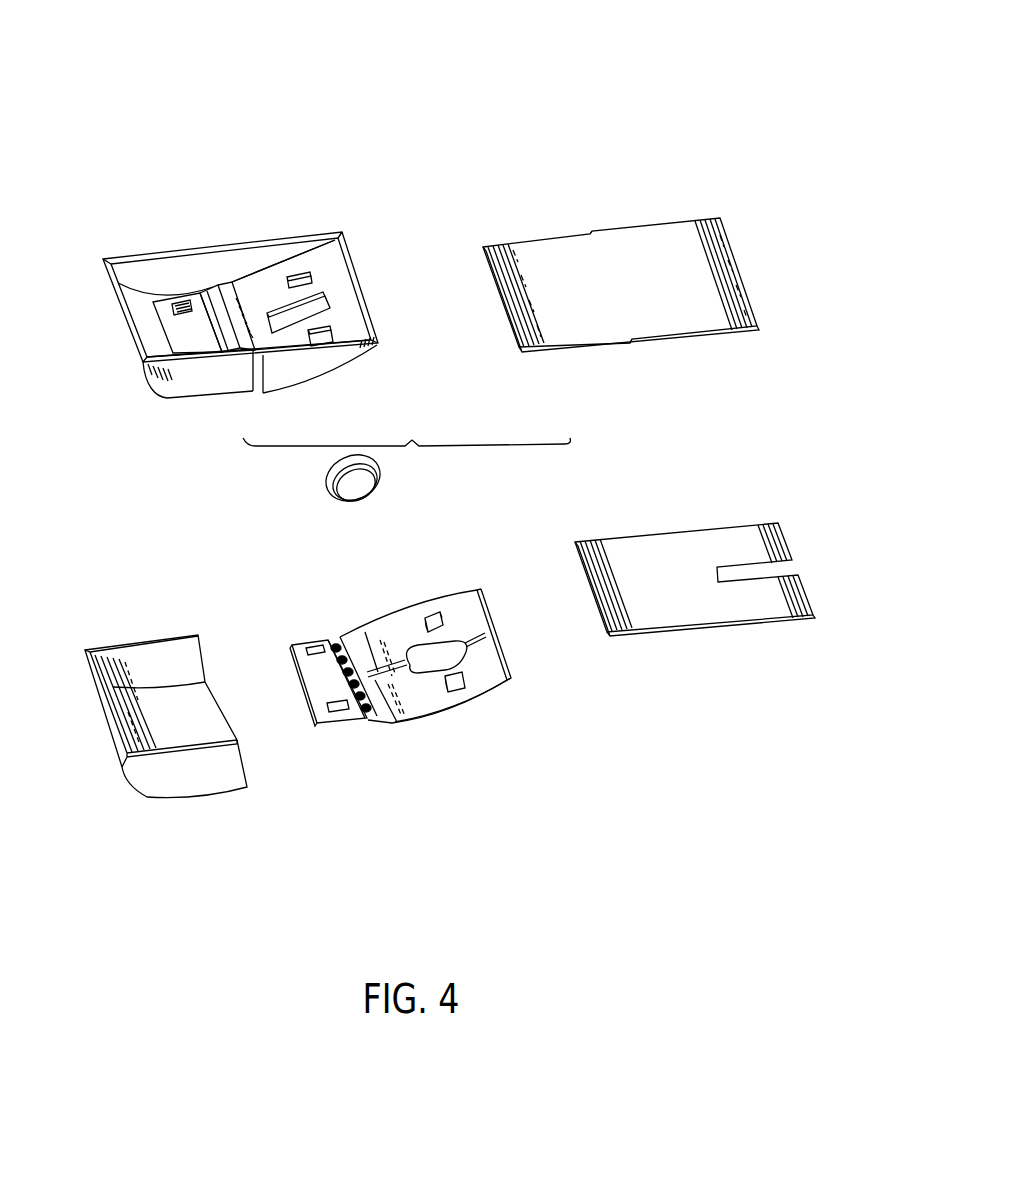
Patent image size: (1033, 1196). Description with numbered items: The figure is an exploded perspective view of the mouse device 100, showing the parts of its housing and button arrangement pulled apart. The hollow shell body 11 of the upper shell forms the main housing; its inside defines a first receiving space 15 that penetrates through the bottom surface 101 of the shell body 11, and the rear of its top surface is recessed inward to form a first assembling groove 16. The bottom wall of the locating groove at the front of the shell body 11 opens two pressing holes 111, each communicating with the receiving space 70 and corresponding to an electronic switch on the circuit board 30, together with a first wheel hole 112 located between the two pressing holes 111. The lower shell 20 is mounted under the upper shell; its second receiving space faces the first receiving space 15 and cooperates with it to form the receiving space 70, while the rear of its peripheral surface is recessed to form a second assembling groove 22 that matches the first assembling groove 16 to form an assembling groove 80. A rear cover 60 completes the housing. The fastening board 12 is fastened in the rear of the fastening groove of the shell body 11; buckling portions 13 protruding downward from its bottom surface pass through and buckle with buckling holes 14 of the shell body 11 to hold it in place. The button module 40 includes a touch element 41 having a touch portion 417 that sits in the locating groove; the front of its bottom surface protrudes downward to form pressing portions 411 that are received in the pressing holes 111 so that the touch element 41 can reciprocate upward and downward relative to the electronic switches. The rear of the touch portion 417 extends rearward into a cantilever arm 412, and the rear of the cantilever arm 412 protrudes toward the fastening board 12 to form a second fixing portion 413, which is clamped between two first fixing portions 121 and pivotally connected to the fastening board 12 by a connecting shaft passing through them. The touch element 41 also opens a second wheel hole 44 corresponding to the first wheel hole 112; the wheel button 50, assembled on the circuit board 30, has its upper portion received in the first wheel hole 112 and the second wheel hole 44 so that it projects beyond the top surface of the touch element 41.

The mouse device 100 is at (117, 58).
The shell body 11 is at (160, 405).
The buckling hole 14 is at (172, 303).
The first receiving space 15 is at (247, 282).
The first assembling groove 16 is at (247, 370).
The receiving space 70 is at (317, 265).
The bottom surface 101 is at (338, 233).
The pressing hole 111 is at (300, 273).
The first wheel hole 112 is at (313, 307).
The lower shell 20 is at (680, 350).
The second assembling groove 22 is at (555, 352).
The assembling groove 80 is at (406, 457).
The wheel button 50 is at (343, 505).
The circuit board 30 is at (680, 632).
The rear cover 60 is at (170, 800).
The button module 40 is at (408, 730).
The touch element 41 is at (467, 600).
The pressing portion 411 is at (427, 613).
The cantilever arm 412 is at (357, 648).
The touch portion 417 is at (477, 623).
The second wheel hole 44 is at (440, 657).
The fastening board 12 is at (315, 673).
The second fixing portion 413 is at (320, 643).
The buckling portion 13 is at (327, 707).
The first fixing portion 121 is at (333, 640).